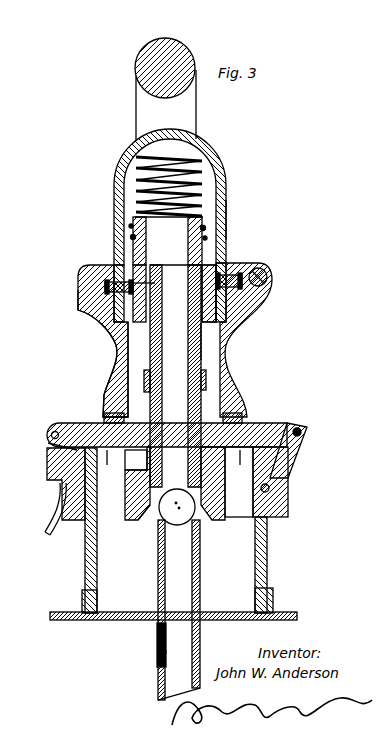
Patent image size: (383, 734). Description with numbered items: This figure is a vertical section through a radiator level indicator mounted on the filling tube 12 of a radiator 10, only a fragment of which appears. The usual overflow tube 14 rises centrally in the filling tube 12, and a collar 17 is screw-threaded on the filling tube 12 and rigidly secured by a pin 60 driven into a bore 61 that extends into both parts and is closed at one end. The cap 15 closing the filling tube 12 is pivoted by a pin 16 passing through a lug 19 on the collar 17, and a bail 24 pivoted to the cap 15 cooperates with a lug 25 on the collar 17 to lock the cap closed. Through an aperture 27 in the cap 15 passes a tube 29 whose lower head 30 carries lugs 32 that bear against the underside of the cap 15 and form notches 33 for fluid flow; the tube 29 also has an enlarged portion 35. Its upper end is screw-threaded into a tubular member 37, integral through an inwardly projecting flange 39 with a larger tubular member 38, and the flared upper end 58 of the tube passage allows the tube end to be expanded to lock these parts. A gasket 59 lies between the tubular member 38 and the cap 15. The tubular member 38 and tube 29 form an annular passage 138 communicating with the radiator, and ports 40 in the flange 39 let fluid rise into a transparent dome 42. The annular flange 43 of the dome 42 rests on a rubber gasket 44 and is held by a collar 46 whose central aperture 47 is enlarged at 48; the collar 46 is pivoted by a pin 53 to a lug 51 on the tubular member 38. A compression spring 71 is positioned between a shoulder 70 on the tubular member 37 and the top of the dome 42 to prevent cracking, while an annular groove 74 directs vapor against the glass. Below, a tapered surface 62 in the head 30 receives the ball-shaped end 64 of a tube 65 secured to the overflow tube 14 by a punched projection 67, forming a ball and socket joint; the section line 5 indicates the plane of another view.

The dome or hollow member 42 is at (199, 150).
The compression spring 71 is at (135, 203).
The shoulder 70 is at (130, 237).
The tubular member or extension 37 is at (130, 248).
The flared upper end of passage 58 is at (207, 229).
The annular groove 74 is at (208, 232).
The inwardly projecting flange 39 is at (212, 265).
The outwardly extending annular flange 43 is at (237, 280).
The central aperture 47 is at (118, 268).
The enlarged lower end of aperture 48 is at (84, 270).
The collar 46 is at (104, 285).
The pin 53 is at (266, 272).
The lug 51 is at (268, 280).
The rubber gasket 44 is at (78, 300).
The tubular member 38 is at (243, 320).
The apertures or ports 40 is at (132, 310).
The tube 29 is at (202, 356).
The annular passage 138 is at (134, 364).
The enlarged portion 35 is at (207, 378).
The gasket 59 is at (240, 412).
The aperture 27 is at (196, 438).
The cap 15 is at (255, 428).
The pin 16 is at (299, 427).
The lug 19 is at (303, 433).
The lug 25 is at (47, 462).
The section line 5 is at (173, 465).
The passages or notches 33 is at (124, 483).
The bail 24 is at (52, 500).
The head 30 is at (142, 500).
The tapered surface 62 is at (152, 524).
The lugs 32 is at (239, 482).
The collar 17 is at (289, 478).
The pin 60 is at (270, 489).
The bore 61 is at (282, 503).
The ball-shaped end 64 is at (209, 521).
The filling tube 12 is at (268, 536).
The tube 65 is at (199, 569).
The radiator 10 is at (62, 612).
The overflow tube 14 is at (158, 648).
The projection 67 is at (160, 659).